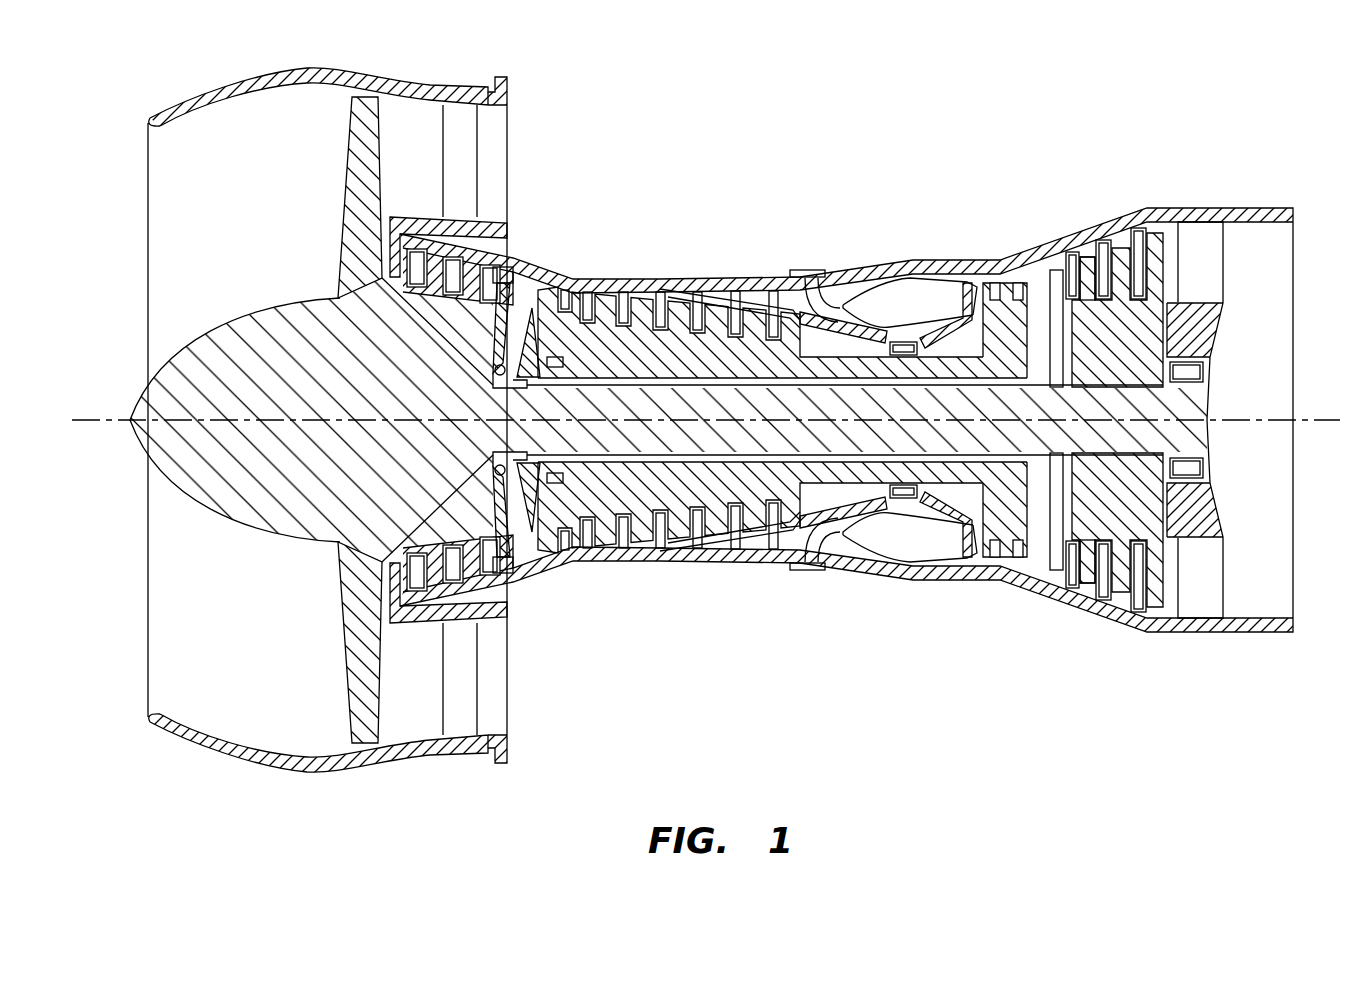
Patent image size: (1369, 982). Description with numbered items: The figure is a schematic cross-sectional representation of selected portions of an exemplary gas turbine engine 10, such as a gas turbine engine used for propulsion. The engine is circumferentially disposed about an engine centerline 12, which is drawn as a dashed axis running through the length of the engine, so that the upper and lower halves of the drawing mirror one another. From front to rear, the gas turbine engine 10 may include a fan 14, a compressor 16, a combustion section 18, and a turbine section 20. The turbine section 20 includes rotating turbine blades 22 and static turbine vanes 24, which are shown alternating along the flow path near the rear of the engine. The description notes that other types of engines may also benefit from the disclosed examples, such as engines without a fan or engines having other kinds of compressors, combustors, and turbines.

The gas turbine engine 10 is at (696, 420).
The engine centerline 12 is at (97, 418).
The fan 14 is at (352, 180).
The compressor 16 is at (782, 245).
The combustion section 18 is at (980, 247).
The turbine section 20 is at (1104, 352).
The rotating turbine blades 22 is at (1105, 370).
The static turbine vanes 24 is at (1070, 257).